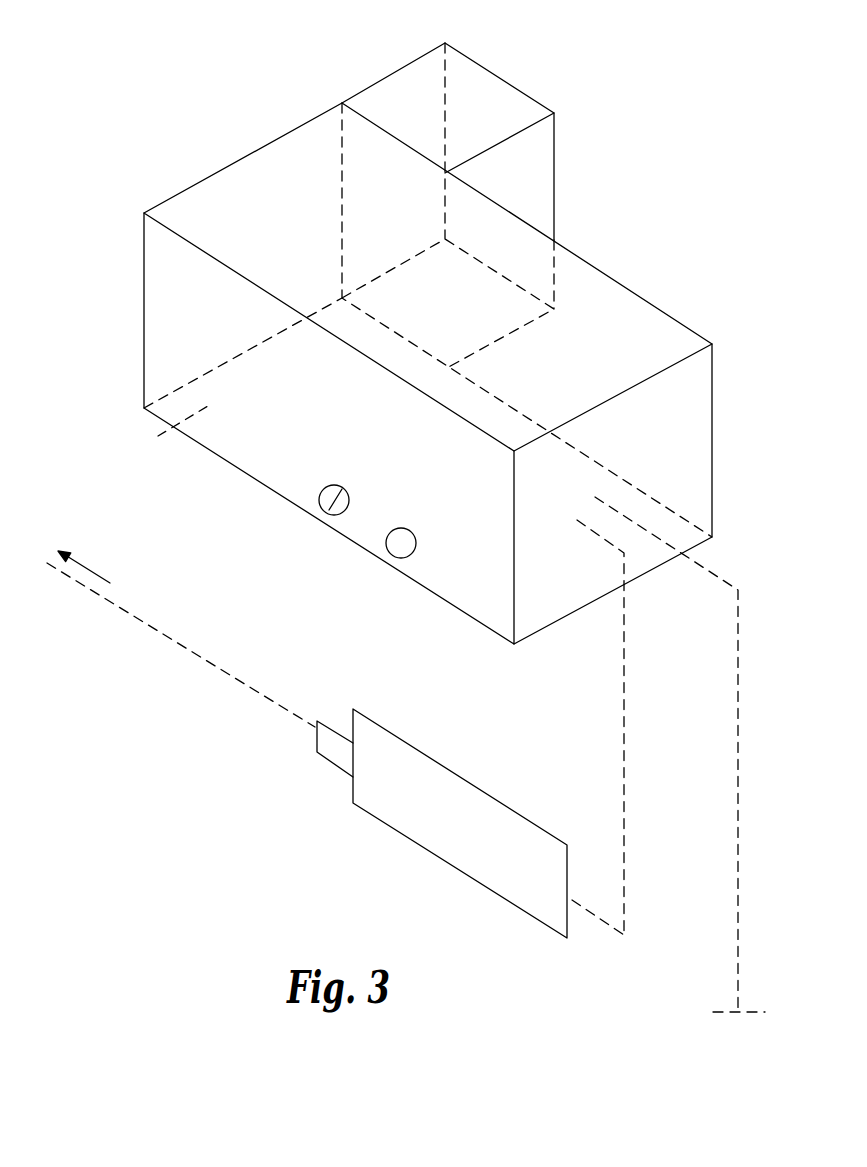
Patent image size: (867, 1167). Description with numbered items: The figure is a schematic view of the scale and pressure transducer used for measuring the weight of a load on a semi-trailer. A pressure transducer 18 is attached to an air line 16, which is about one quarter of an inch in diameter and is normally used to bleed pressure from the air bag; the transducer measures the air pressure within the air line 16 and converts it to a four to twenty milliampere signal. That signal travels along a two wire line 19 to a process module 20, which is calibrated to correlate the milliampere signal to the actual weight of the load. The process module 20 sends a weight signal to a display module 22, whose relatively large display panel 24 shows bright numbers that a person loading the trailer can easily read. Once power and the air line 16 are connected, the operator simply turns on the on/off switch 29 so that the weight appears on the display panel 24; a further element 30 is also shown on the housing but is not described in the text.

The air line 16 is at (240, 686).
The pressure transducer 18 is at (418, 848).
The two wire line 19 is at (625, 747).
The process module 20 is at (413, 82).
The display module 22 is at (215, 187).
The display panel 24 is at (158, 436).
The on/off switch 29 is at (335, 510).
The indicator light 30 is at (400, 550).